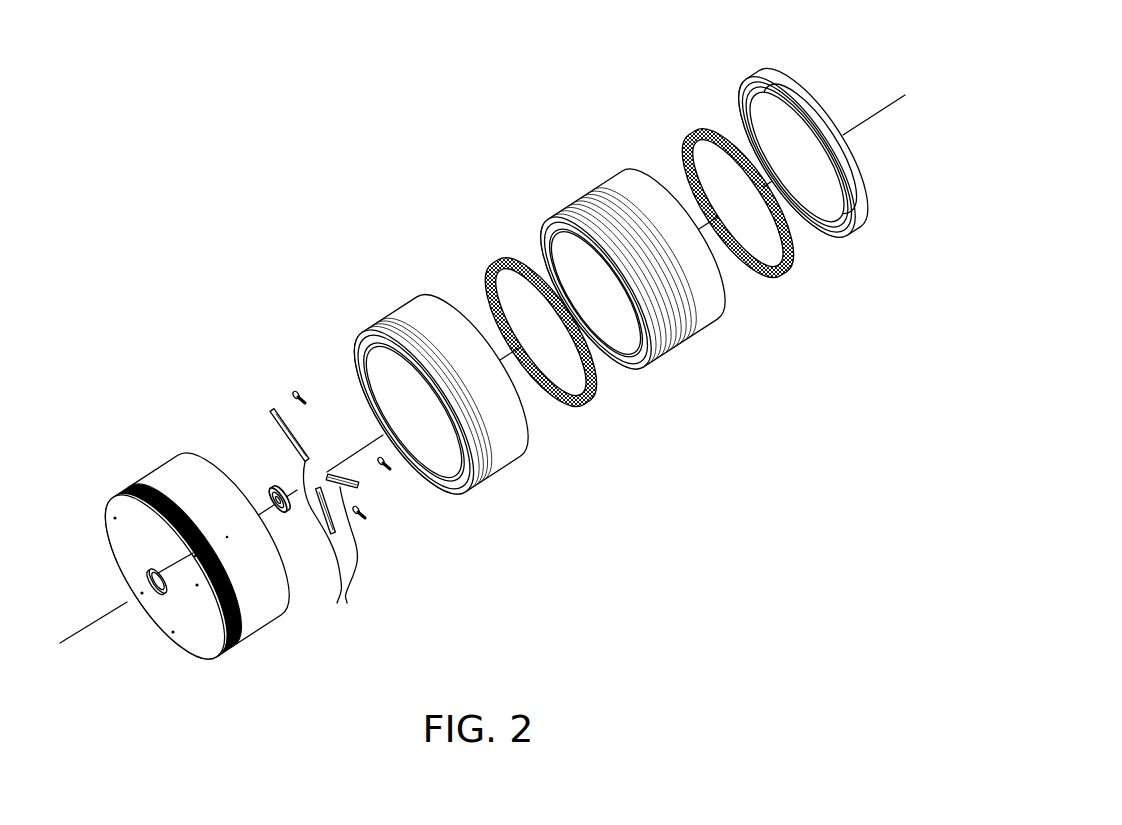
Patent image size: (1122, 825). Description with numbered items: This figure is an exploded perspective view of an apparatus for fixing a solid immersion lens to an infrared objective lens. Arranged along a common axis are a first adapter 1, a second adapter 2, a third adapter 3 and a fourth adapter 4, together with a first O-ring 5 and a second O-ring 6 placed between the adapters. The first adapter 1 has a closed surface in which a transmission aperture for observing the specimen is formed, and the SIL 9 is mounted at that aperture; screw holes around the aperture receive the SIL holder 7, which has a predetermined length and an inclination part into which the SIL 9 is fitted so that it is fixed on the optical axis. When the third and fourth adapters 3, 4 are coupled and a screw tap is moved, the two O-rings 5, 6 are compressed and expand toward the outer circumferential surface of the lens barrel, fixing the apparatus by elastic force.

The first adapter 1 is at (160, 460).
The second adapter 2 is at (397, 318).
The third adapter 3 is at (592, 208).
The fourth adapter 4 is at (754, 81).
The first O-ring 5 is at (580, 406).
The second O-ring 6 is at (776, 278).
The SIL holder 7 is at (342, 605).
The SIL 9 is at (267, 478).